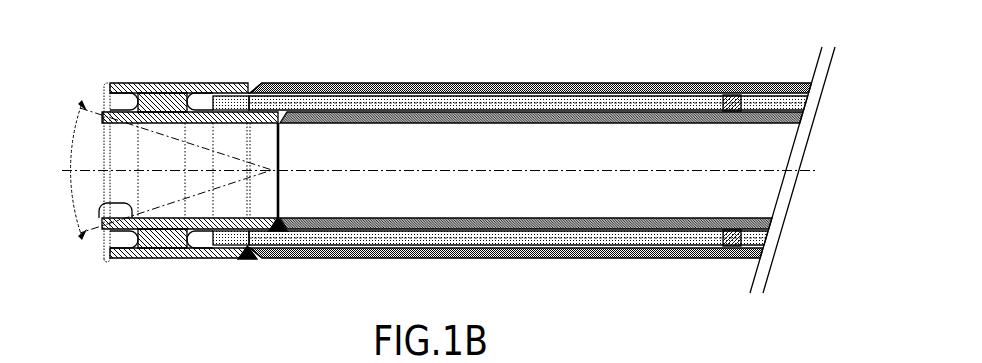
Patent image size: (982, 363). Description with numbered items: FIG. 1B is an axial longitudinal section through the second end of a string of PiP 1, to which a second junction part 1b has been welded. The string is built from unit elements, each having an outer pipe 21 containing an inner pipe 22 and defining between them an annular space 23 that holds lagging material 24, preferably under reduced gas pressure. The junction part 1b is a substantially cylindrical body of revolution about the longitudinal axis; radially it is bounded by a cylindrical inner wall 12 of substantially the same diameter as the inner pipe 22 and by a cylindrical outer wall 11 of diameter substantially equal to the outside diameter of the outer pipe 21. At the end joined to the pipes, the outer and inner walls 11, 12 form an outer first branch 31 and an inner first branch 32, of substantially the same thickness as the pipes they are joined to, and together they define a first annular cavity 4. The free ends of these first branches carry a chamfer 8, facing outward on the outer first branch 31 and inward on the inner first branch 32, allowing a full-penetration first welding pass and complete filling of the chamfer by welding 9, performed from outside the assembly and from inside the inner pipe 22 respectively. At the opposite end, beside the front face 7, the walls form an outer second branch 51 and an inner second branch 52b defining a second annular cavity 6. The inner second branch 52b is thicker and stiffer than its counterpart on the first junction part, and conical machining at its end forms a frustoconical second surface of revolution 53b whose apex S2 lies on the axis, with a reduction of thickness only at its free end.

The PiP 1 is at (312, 287).
The second junction part 1b is at (104, 56).
The cylindrical outer wall 11 is at (172, 84).
The cylindrical inner wall 12 is at (168, 124).
The outer first branch 31 is at (220, 84).
The inner first branch 32 is at (228, 124).
The outer second branch 51 is at (118, 87).
The inner second branch 52b is at (102, 230).
The second surface of revolution 53b is at (103, 125).
The second annular cavity 6 is at (137, 99).
The first annular cavity 4 is at (206, 96).
The front face 7 is at (108, 84).
The chamfer 8 is at (246, 92).
The welding 9 is at (283, 221).
The outer pipe 21 is at (425, 86).
The inner pipe 22 is at (466, 122).
The annular space 23 is at (578, 92).
The lagging material 24 is at (513, 101).
The apex S2 is at (270, 170).